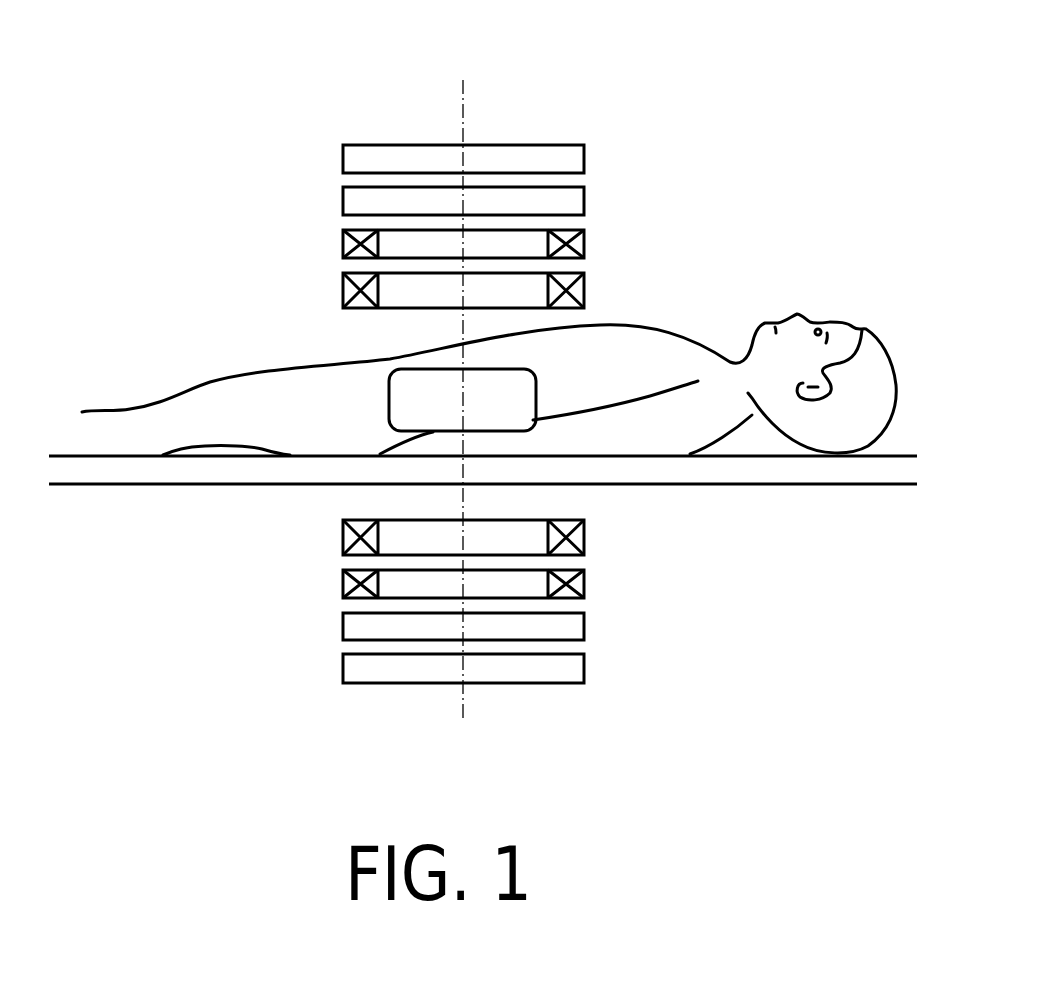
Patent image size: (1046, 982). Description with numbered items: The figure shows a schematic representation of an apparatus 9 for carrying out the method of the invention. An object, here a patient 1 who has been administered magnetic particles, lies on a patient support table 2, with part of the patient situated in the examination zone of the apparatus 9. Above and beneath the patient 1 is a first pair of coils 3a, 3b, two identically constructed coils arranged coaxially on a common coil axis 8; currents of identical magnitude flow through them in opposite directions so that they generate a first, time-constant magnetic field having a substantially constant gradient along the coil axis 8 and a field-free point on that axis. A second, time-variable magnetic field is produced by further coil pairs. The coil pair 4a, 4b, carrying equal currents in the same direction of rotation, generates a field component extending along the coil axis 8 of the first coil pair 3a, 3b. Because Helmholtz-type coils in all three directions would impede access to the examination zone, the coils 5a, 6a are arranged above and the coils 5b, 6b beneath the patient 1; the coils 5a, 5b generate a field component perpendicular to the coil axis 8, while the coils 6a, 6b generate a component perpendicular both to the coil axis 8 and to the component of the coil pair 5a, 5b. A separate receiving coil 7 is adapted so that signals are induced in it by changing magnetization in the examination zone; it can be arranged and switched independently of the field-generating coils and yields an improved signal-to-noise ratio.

The patient 1 is at (107, 422).
The patient support table 2 is at (870, 474).
The coil of first coil pair 3a is at (343, 291).
The coil of first coil pair 3b is at (343, 538).
The coil of second coil pair 4a is at (584, 245).
The coil of second coil pair 4b is at (584, 584).
The coil of third coil pair 5a is at (343, 203).
The coil of third coil pair 5b is at (343, 628).
The coil of fourth coil pair 6a is at (584, 158).
The coil of fourth coil pair 6b is at (584, 670).
The receiving coil 7 is at (389, 397).
The coil axis 8 is at (463, 102).
The apparatus 9 is at (837, 117).